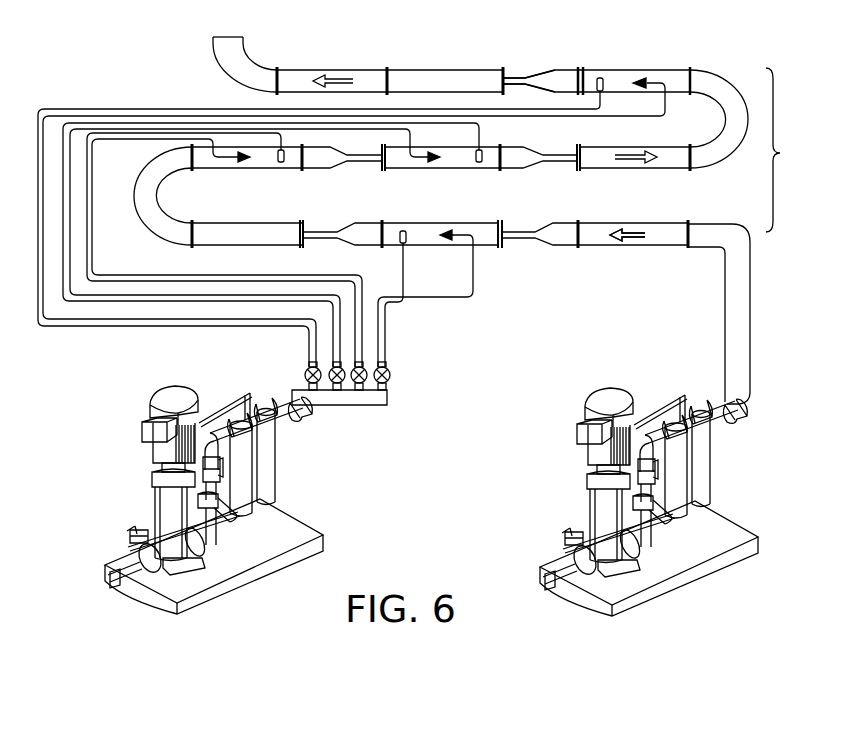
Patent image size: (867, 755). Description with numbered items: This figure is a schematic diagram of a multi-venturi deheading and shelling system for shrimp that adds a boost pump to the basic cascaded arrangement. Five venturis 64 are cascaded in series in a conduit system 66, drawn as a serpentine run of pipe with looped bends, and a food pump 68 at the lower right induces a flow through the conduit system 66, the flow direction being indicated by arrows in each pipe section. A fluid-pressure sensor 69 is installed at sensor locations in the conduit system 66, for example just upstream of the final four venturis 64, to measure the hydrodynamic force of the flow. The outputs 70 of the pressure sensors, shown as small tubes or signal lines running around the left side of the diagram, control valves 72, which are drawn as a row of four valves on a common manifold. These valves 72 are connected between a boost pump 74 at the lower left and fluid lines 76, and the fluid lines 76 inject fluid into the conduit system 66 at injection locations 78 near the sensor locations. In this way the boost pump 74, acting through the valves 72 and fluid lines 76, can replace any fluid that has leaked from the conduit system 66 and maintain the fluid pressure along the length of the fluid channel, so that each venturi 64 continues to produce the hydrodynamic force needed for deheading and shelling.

The venturi 64 is at (525, 80).
The conduit system 66 is at (471, 220).
The food pump 68 is at (596, 402).
The fluid-pressure sensor 69 is at (602, 80).
The outputs 70 is at (138, 326).
The valves 72 is at (306, 372).
The boost pump 74 is at (162, 398).
The fluid lines 76 is at (418, 305).
The injection locations 78 is at (457, 232).